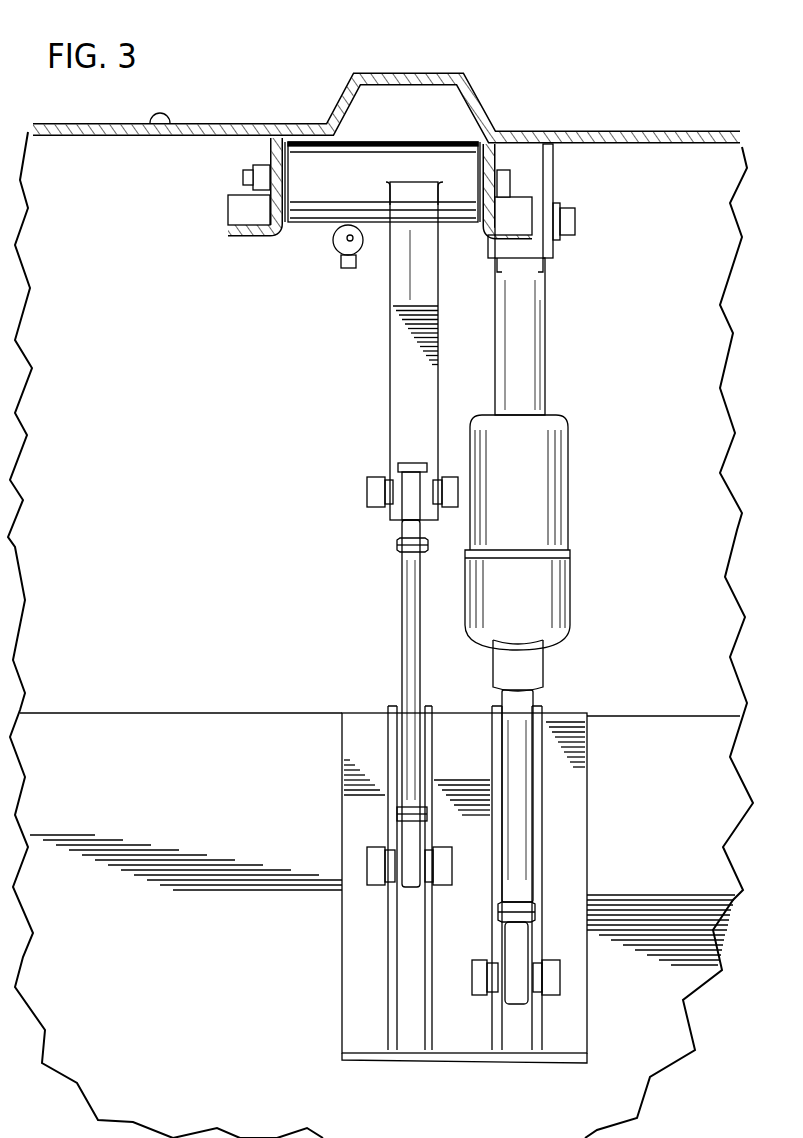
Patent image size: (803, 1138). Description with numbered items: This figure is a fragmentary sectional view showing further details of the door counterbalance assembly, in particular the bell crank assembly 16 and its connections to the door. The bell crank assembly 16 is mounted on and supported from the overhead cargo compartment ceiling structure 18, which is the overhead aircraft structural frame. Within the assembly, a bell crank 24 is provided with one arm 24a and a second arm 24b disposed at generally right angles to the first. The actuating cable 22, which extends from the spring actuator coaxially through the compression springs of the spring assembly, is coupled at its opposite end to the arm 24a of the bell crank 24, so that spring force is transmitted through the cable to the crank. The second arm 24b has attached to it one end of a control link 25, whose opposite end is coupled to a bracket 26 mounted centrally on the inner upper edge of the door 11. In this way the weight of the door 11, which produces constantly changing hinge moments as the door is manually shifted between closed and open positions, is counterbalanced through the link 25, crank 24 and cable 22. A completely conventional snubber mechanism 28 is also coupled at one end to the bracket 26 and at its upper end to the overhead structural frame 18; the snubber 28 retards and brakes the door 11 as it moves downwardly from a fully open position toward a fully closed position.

The door 11 is at (207, 718).
The bell crank assembly 16 is at (372, 408).
The overhead cargo compartment ceiling structure 18 is at (143, 128).
The actuating cable 22 is at (348, 242).
The bell crank 24 is at (313, 160).
The arm of bell crank 24a is at (347, 262).
The second arm of bell crank 24b is at (395, 352).
The control link 25 is at (405, 608).
The bracket 26 is at (385, 975).
The snubber mechanism 28 is at (548, 480).